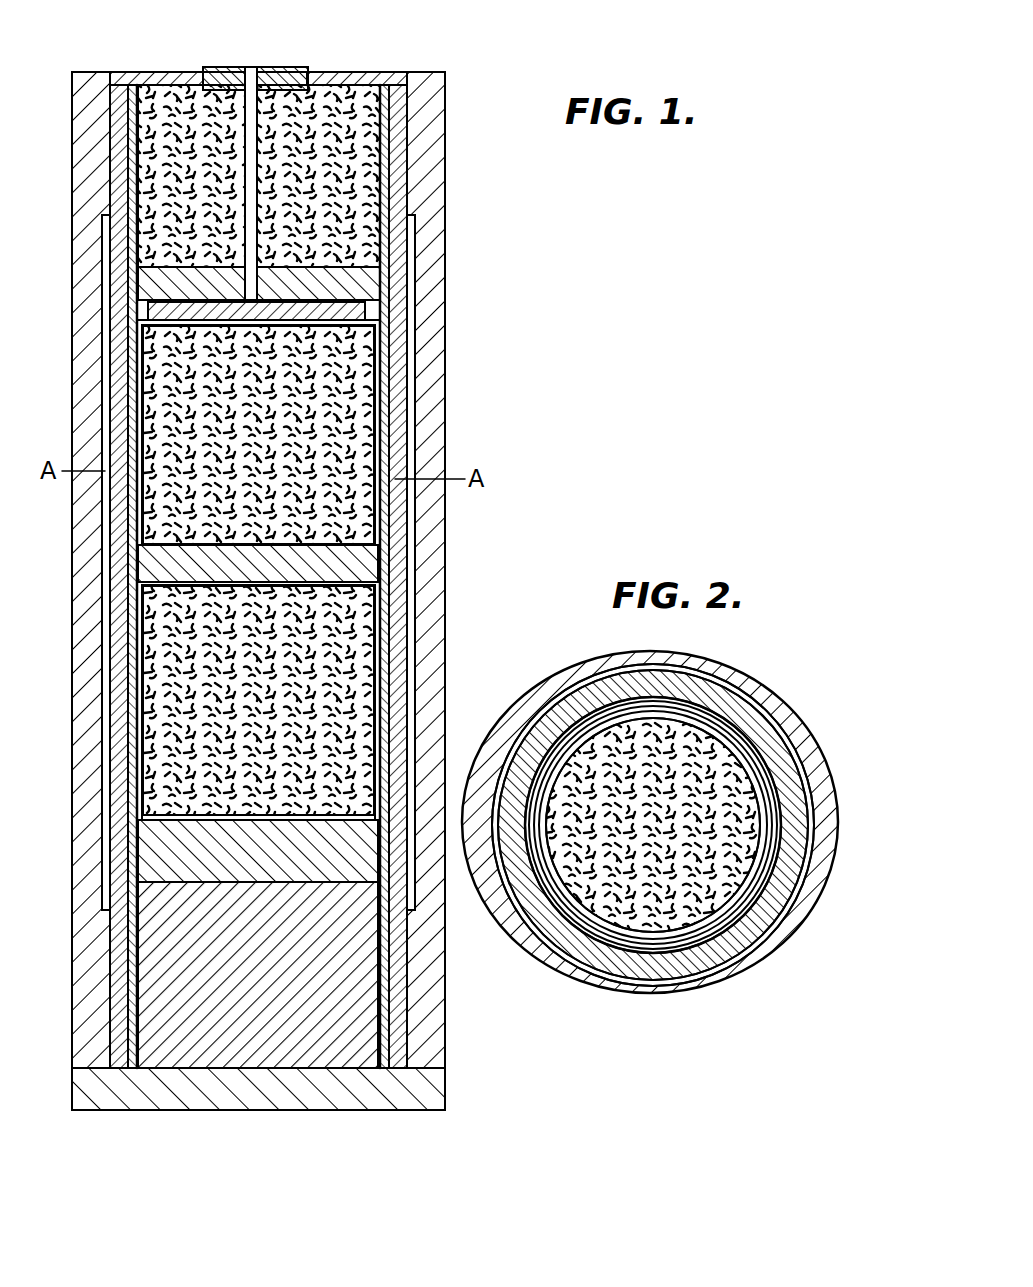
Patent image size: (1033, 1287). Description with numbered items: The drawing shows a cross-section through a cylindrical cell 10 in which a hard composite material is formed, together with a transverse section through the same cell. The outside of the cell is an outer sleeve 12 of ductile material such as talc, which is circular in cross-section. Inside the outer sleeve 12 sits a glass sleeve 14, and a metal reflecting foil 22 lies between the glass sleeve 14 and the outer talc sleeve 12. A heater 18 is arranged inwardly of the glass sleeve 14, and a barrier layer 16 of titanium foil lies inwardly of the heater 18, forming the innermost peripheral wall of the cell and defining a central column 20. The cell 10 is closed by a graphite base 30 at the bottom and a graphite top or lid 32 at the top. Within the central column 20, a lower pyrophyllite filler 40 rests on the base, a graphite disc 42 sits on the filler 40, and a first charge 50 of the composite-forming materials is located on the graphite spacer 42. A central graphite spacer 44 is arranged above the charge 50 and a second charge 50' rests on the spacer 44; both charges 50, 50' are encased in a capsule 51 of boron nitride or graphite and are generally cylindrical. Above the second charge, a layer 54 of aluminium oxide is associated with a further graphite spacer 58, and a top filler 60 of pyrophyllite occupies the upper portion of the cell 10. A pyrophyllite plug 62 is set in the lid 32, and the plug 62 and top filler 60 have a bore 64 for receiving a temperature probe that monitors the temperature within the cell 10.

In FIG. 1, the cell 10 is at (458, 243).
In FIG. 1, the outer sleeve 12 is at (430, 343).
In FIG. 2, the outer sleeve 12 is at (770, 707).
In FIG. 1, the glass sleeve 14 is at (398, 525).
In FIG. 2, the glass sleeve 14 is at (634, 950).
In FIG. 1, the barrier layer 16 is at (445, 173).
In FIG. 2, the barrier layer 16 is at (717, 730).
In FIG. 1, the heater 18 is at (385, 553).
In FIG. 2, the heater 18 is at (700, 928).
In FIG. 1, the central column 20 is at (365, 1003).
In FIG. 1, the metal reflecting foil 22 is at (420, 274).
In FIG. 2, the metal reflecting foil 22 is at (500, 942).
In FIG. 1, the graphite base 30 is at (185, 1092).
In FIG. 1, the graphite top or lid 32 is at (147, 68).
In FIG. 1, the lower filler 40 is at (262, 1045).
In FIG. 1, the graphite disc 42 is at (150, 845).
In FIG. 1, the central graphite spacer 44 is at (145, 553).
In FIG. 1, the first charge 50 is at (338, 700).
In FIG. 1, the second charge 50' is at (341, 435).
In FIG. 2, the second charge 50' is at (653, 880).
In FIG. 1, the capsule 51 is at (380, 418).
In FIG. 2, the capsule 51 is at (667, 920).
In FIG. 1, the layer of Al2O3 54 is at (160, 318).
In FIG. 1, the further graphite spacer 58 is at (155, 280).
In FIG. 1, the top filler 60 is at (157, 165).
In FIG. 1, the pyrophyllite plug 62 is at (226, 67).
In FIG. 1, the bore 64 is at (318, 67).